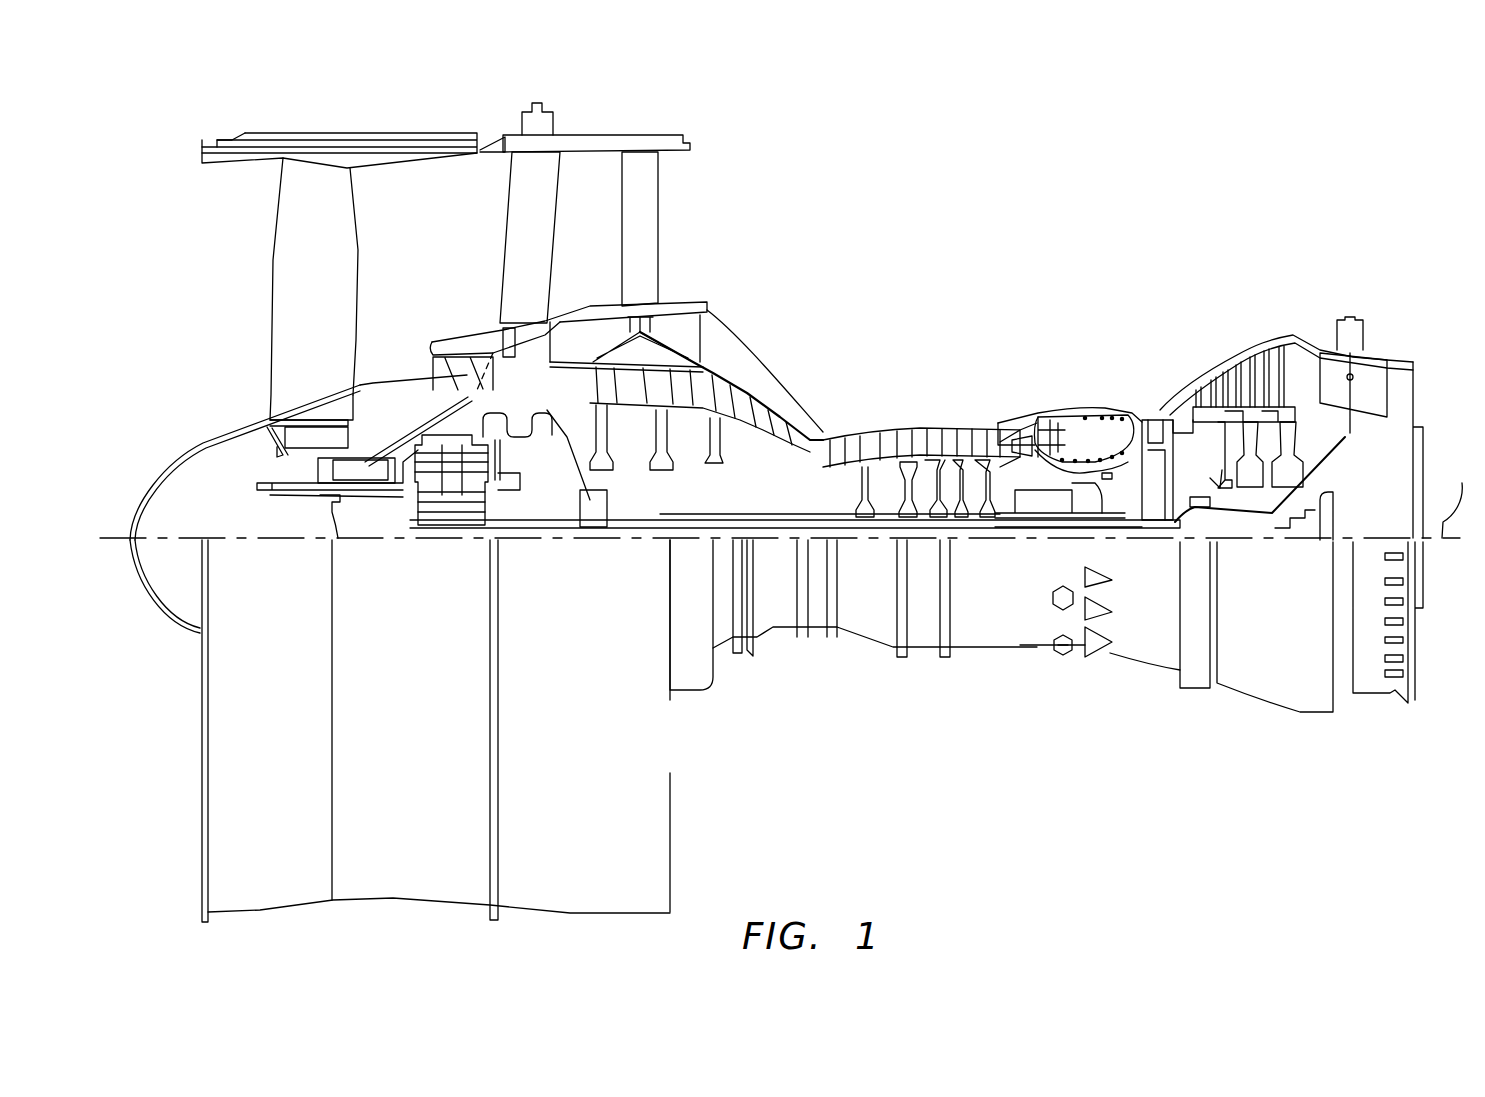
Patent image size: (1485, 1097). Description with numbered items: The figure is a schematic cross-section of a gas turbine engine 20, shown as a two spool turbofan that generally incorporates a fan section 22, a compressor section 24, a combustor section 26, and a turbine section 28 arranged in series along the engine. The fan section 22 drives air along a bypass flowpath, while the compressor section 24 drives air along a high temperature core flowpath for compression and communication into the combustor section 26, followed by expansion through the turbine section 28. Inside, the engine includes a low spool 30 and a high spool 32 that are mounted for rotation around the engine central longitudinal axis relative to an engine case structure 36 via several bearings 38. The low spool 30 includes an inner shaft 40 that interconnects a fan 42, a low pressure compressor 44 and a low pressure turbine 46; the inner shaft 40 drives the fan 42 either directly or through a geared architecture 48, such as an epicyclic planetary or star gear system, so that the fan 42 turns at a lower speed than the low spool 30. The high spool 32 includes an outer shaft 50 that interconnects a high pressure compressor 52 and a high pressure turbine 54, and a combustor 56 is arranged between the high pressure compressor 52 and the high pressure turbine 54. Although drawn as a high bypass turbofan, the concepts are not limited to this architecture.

The gas turbine engine 20 is at (1140, 192).
The fan section 22 is at (200, 110).
The compressor section 24 is at (503, 277).
The combustor section 26 is at (1132, 277).
The turbine section 28 is at (1352, 277).
The low spool 30 is at (775, 487).
The high spool 32 is at (997, 467).
The engine case structure 36 is at (922, 657).
The bearings 38 is at (238, 618).
The inner shaft 40 is at (1120, 547).
The fan 42 is at (333, 345).
The low pressure compressor 44 is at (690, 379).
The low pressure turbine 46 is at (1263, 370).
The geared architecture 48 is at (452, 490).
The outer shaft 50 is at (1115, 518).
The high pressure compressor 52 is at (846, 455).
The high pressure turbine 54 is at (1153, 433).
The combustor 56 is at (1092, 440).